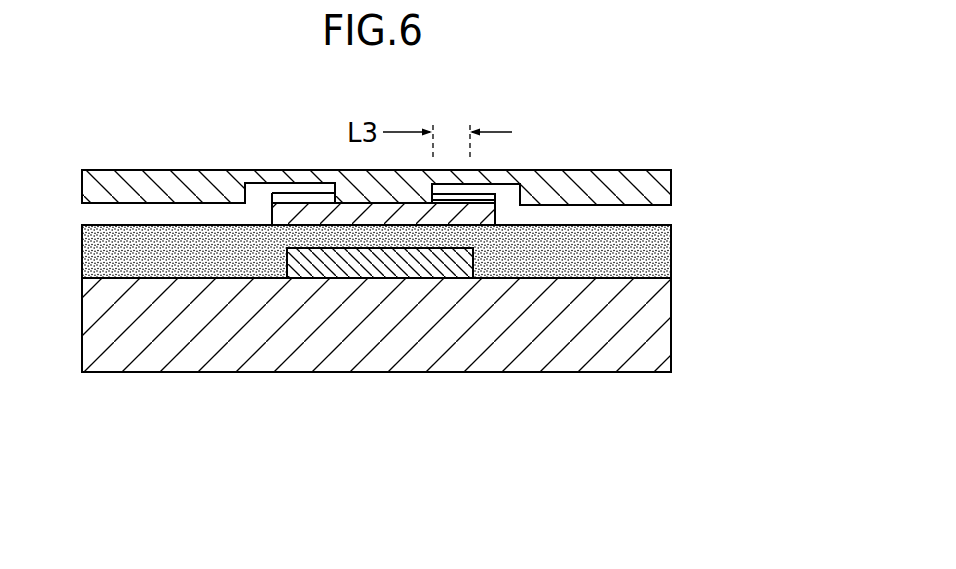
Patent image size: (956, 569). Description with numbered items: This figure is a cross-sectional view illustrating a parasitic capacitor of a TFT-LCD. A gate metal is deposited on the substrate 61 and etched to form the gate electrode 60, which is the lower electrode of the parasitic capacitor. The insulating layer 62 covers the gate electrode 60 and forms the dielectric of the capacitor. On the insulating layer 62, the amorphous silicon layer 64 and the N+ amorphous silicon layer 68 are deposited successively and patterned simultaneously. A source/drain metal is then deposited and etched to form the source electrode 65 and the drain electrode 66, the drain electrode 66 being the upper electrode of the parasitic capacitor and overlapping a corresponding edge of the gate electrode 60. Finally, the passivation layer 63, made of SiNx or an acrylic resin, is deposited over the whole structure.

The gate electrode 60 is at (380, 268).
The substrate 61 is at (670, 327).
The insulating layer 62 is at (671, 252).
The passivation layer 63 is at (671, 185).
The amorphous silicon layer 64 is at (480, 213).
The source electrode 65 is at (100, 212).
The drain electrode 66 is at (653, 218).
The N+ amorphous silicon layer 68 is at (477, 197).